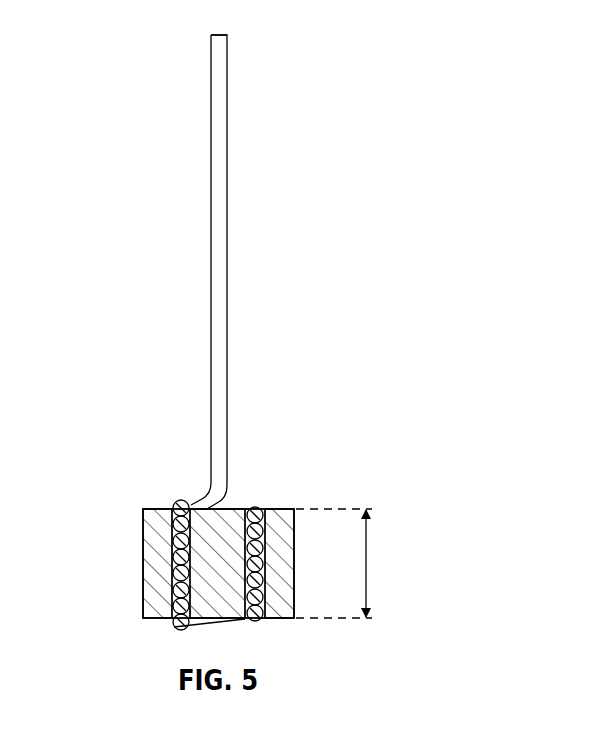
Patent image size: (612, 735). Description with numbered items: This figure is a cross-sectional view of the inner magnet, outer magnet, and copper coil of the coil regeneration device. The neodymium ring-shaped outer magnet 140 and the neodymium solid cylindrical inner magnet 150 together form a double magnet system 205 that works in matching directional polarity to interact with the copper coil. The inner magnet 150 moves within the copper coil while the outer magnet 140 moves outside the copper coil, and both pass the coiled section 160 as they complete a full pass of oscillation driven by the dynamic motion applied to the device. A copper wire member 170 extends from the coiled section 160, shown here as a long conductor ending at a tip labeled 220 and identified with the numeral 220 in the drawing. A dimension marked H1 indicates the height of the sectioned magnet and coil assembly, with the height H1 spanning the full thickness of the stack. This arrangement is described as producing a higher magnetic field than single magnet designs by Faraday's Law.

The tube end / inlet 220 is at (217, 34).
The copper wire member 170 is at (226, 126).
The double magnet system 205 is at (124, 461).
The coiled section 160 is at (180, 506).
The inner magnet 150 is at (236, 508).
The outer magnet 140 is at (286, 508).
The height dimension H1 is at (367, 565).